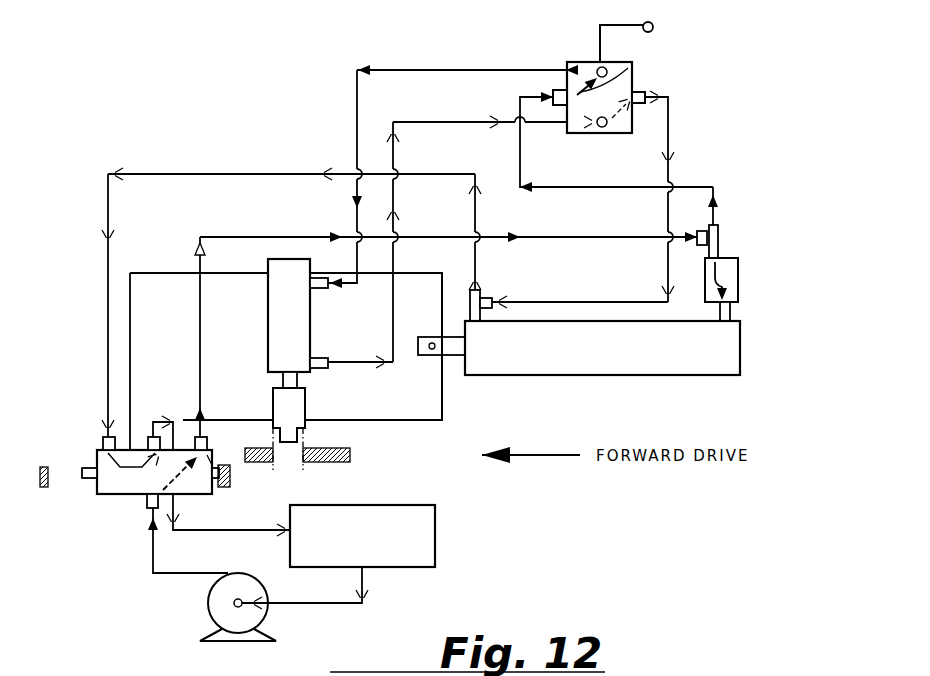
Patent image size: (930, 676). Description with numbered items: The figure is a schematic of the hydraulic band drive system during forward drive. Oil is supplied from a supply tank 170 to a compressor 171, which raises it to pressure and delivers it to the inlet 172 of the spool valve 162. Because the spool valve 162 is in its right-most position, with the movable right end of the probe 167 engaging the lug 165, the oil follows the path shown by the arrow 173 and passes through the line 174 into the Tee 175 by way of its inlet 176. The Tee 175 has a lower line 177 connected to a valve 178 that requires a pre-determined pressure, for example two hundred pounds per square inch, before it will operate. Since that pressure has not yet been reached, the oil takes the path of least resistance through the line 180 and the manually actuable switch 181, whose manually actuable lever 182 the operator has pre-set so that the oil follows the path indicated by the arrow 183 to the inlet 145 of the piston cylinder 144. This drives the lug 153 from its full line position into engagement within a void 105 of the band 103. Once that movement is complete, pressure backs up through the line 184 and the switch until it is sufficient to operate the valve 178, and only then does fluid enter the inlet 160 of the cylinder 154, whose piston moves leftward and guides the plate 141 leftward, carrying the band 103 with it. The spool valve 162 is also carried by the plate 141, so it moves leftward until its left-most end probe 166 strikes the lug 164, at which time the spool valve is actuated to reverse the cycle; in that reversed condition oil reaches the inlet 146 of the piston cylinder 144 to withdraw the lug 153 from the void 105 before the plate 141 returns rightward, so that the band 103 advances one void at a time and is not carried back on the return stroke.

The line 184 is at (440, 68).
The manually actuable lever 182 is at (598, 28).
The manually actuable switch 181 is at (634, 88).
The arrow 183 is at (600, 90).
The line 180 is at (577, 186).
The Tee 175 is at (730, 219).
The inlet 176 is at (705, 231).
The lower line 177 is at (718, 250).
The valve 178 is at (732, 270).
The inlet 160 is at (733, 312).
The cylinder 154 is at (620, 378).
The plate 141 is at (444, 397).
The piston cylinder 144 is at (300, 325).
The inlet 145 is at (320, 288).
The inlet 146 is at (320, 368).
The lug 153 is at (306, 432).
The band 103 is at (350, 458).
The void 105 is at (322, 462).
The line 174 is at (202, 343).
The spool valve 162 is at (205, 484).
The arrow 173 is at (185, 480).
The inlet 172 is at (150, 508).
The left-most end probe 166 is at (88, 478).
The lug 165 is at (232, 476).
The probe 167 is at (214, 463).
The lug 164 is at (49, 465).
The supply tank 170 is at (437, 537).
The compressor 171 is at (210, 604).